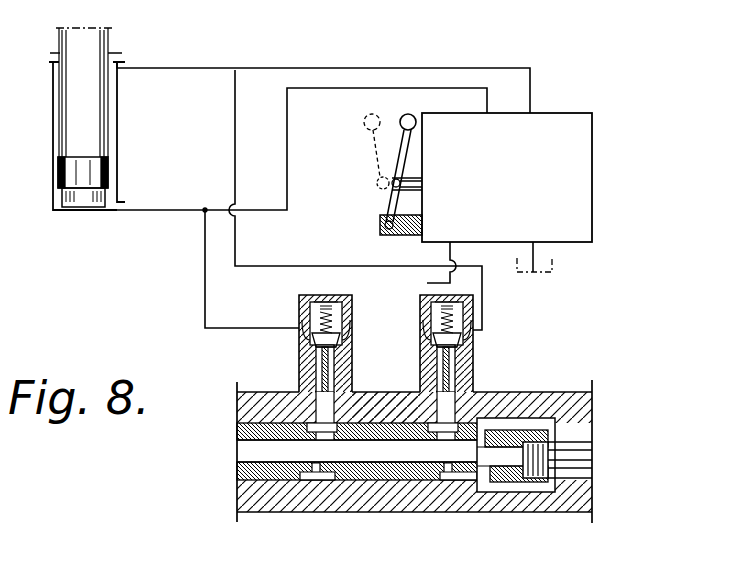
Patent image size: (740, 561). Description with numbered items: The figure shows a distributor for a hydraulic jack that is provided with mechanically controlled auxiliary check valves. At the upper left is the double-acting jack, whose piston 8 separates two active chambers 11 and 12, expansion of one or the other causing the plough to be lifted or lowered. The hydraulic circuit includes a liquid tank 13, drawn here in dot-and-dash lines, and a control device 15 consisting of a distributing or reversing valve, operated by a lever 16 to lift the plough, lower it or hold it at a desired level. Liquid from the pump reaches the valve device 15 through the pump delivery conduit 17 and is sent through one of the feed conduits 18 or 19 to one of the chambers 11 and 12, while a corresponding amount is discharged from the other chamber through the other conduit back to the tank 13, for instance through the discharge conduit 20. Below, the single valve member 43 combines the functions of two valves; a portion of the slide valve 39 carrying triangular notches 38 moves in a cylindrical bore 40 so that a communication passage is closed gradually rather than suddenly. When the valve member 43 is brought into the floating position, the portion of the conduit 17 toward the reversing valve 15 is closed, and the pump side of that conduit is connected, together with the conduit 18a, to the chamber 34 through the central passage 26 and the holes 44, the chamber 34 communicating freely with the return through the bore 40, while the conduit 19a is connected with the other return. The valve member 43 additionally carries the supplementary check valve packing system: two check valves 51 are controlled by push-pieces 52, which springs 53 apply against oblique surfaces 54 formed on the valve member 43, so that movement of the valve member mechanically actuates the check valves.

The piston 8 is at (90, 177).
The active chamber 11 is at (88, 207).
The active chamber 12 is at (55, 118).
The liquid tank 13 is at (552, 272).
The control device 15 is at (578, 192).
The lever 16 is at (397, 163).
The pump delivery conduit 17 is at (449, 252).
The feed conduit 18 is at (168, 210).
The conduit 18a is at (203, 293).
The feed conduit 19 is at (172, 68).
The conduit 19a is at (325, 266).
The discharge conduit 20 is at (536, 250).
The central passage 26 is at (370, 460).
The chamber 34 is at (522, 492).
The triangular notches 38 is at (540, 430).
The portion of the slide valve 39 is at (500, 482).
The cylindrical bore 40 is at (570, 481).
The valve member 43 is at (245, 472).
The holes 44 is at (487, 437).
The check valves 51 is at (433, 342).
The push-pieces 52 is at (438, 375).
The springs 53 is at (430, 311).
The oblique surfaces 54 is at (326, 481).